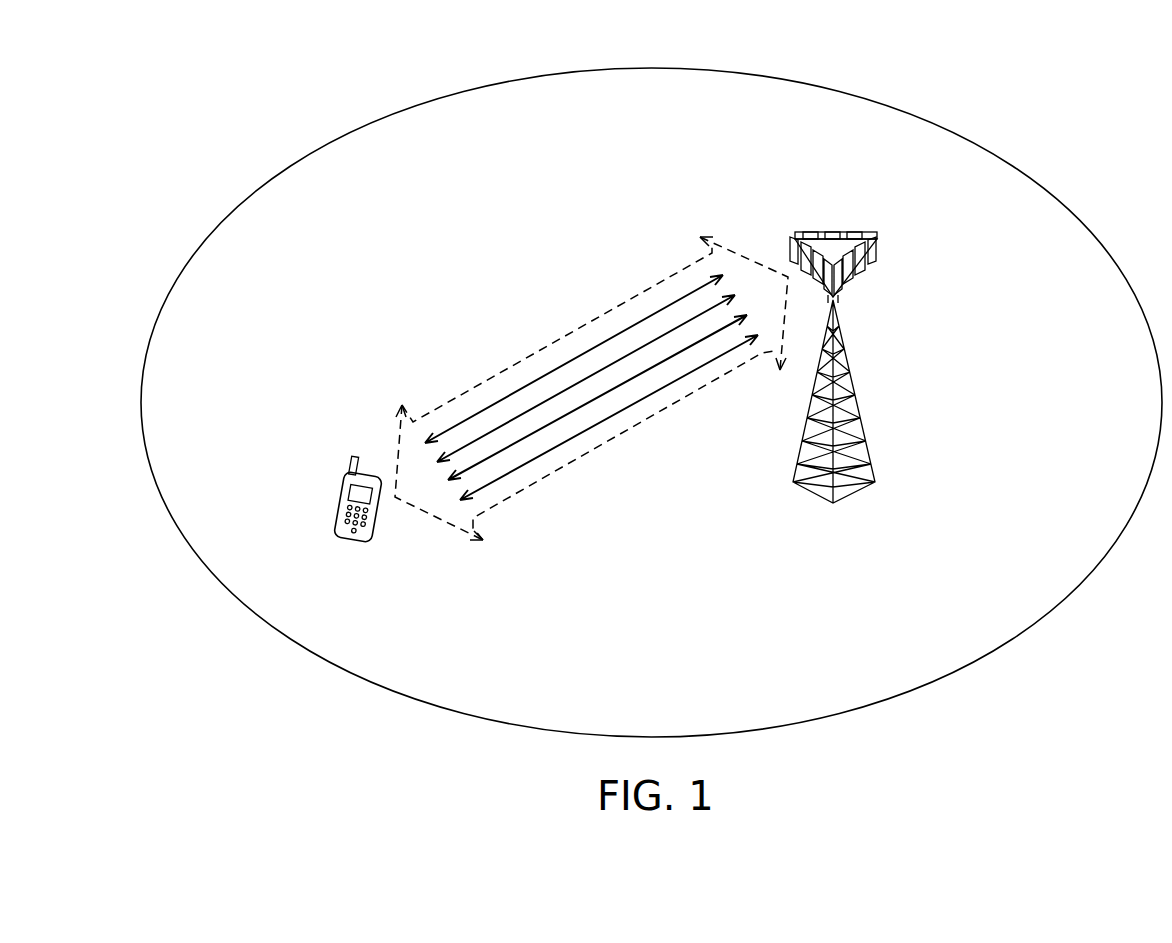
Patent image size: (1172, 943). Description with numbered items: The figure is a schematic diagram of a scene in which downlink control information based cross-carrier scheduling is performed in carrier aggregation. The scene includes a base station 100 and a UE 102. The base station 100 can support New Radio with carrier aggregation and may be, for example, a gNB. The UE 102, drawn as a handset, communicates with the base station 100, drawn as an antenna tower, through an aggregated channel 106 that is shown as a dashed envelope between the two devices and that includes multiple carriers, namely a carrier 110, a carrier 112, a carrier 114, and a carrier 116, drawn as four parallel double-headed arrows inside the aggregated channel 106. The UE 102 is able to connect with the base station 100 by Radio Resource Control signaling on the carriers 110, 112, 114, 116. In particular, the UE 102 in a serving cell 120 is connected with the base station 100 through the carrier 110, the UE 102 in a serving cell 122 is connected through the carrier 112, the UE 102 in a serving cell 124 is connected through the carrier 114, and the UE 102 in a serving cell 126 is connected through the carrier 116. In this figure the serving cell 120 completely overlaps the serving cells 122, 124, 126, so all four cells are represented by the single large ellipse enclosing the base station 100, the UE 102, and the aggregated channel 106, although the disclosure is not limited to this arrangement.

The base station 100 is at (833, 232).
The UE 102 is at (338, 500).
The aggregated channel 106 is at (453, 400).
The carrier 110 is at (690, 293).
The carrier 112 is at (655, 338).
The carrier 114 is at (613, 387).
The carrier 116 is at (572, 437).
The serving cell 120 is at (651, 386).
The serving cell 122 is at (651, 386).
The serving cell 124 is at (651, 386).
The serving cell 126 is at (650, 67).